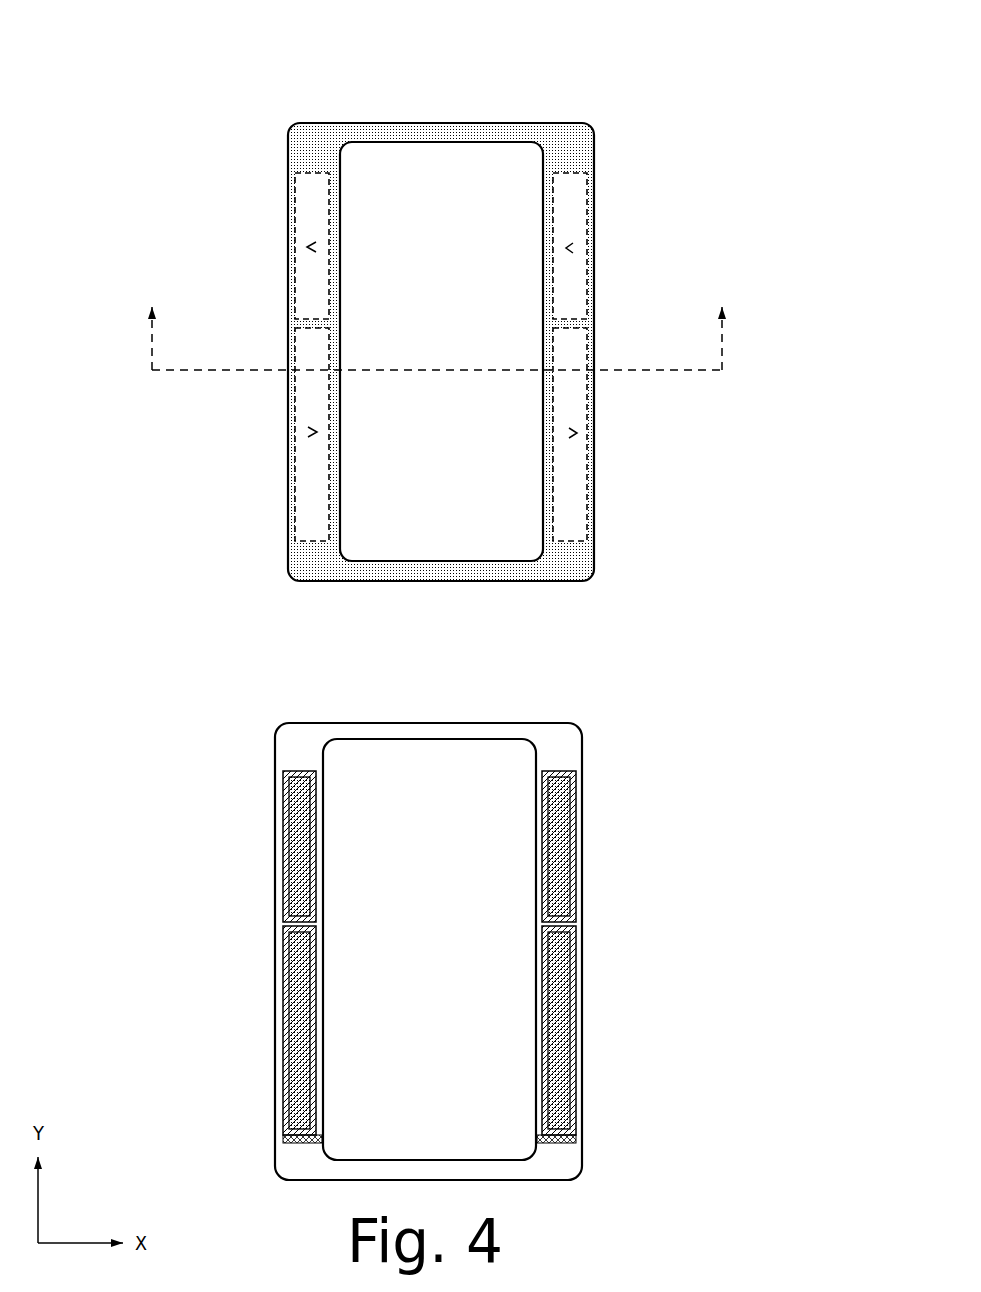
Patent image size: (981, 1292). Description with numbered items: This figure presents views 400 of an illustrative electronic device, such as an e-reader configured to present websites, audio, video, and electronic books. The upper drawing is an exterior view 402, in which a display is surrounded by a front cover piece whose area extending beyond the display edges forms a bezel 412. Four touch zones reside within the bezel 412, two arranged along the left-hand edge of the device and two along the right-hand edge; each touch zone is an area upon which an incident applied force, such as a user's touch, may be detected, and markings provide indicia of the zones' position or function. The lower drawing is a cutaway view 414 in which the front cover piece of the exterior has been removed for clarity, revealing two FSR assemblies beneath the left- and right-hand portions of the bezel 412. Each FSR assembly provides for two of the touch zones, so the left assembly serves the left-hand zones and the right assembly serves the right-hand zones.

The views 400 is at (727, 140).
The exterior view 402 is at (237, 137).
The bezel 412 is at (313, 547).
The cutaway view 414 is at (258, 707).